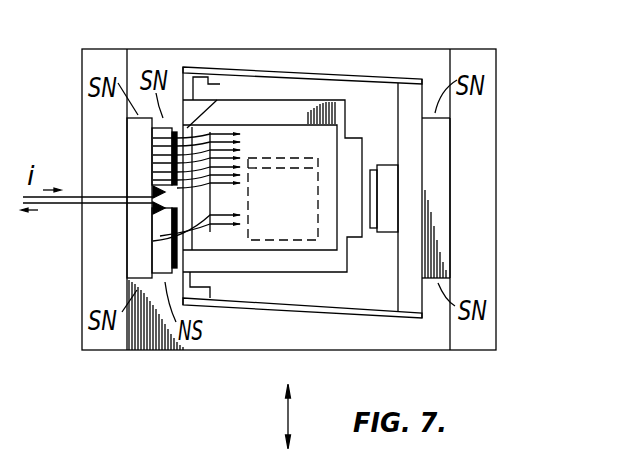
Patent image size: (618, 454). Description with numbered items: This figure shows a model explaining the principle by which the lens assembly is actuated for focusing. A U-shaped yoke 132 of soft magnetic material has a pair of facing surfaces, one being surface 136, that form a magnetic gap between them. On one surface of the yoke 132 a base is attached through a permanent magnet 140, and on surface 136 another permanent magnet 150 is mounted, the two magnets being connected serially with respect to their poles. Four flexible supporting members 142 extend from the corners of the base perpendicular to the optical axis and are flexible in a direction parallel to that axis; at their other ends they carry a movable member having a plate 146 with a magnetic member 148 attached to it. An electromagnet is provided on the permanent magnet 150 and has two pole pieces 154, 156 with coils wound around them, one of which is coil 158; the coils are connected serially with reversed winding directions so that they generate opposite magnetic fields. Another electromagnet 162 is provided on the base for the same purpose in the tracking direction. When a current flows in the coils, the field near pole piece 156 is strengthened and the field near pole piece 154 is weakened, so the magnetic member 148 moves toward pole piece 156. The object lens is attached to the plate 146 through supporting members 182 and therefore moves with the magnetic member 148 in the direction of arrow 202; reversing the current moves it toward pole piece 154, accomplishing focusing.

The U-shaped yoke 132 is at (98, 62).
The surface of yoke 136 is at (412, 296).
The permanent magnet 140 is at (435, 168).
The flexible supporting members 142 is at (323, 315).
The plate 146 is at (181, 83).
The magnetic member 148 is at (210, 199).
The permanent magnet 150 is at (140, 262).
The pole piece 154 is at (178, 250).
The pole piece 156 is at (202, 130).
The coil 158 is at (157, 248).
The electromagnet 162 is at (385, 215).
The supporting members 182 is at (288, 112).
The arrow 202 is at (287, 407).